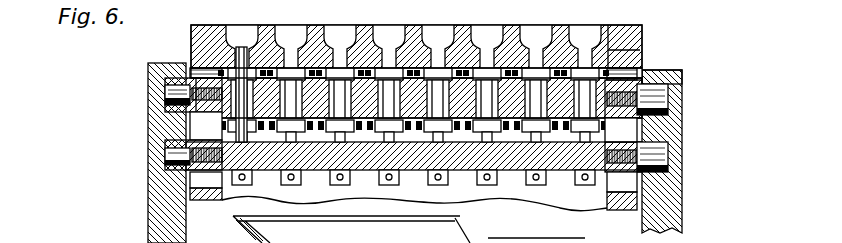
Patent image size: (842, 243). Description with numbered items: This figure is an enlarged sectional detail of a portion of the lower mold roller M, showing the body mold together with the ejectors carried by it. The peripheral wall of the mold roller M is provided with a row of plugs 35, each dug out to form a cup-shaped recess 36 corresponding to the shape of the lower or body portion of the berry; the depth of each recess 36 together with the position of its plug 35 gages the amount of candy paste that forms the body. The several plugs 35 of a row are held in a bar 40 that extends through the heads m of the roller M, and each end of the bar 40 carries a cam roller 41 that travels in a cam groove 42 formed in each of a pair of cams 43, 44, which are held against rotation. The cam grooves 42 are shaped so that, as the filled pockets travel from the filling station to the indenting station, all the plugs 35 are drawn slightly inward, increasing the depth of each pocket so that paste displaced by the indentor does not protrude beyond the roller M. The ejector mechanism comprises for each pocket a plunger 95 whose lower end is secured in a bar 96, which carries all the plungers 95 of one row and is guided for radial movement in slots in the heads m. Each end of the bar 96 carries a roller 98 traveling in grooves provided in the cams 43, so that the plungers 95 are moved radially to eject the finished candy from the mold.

The plug 35 is at (250, 47).
The cup-shaped recess 36 is at (296, 33).
The plunger 95 is at (587, 50).
The bar 96 is at (519, 160).
The cam roller 41 is at (152, 82).
The cam groove 42 is at (150, 106).
The roller 98 is at (150, 146).
The cam 44 is at (146, 198).
The bar 40 is at (665, 72).
The cam 43 is at (680, 196).
The head m is at (208, 200).
The lower mold roller M is at (568, 199).